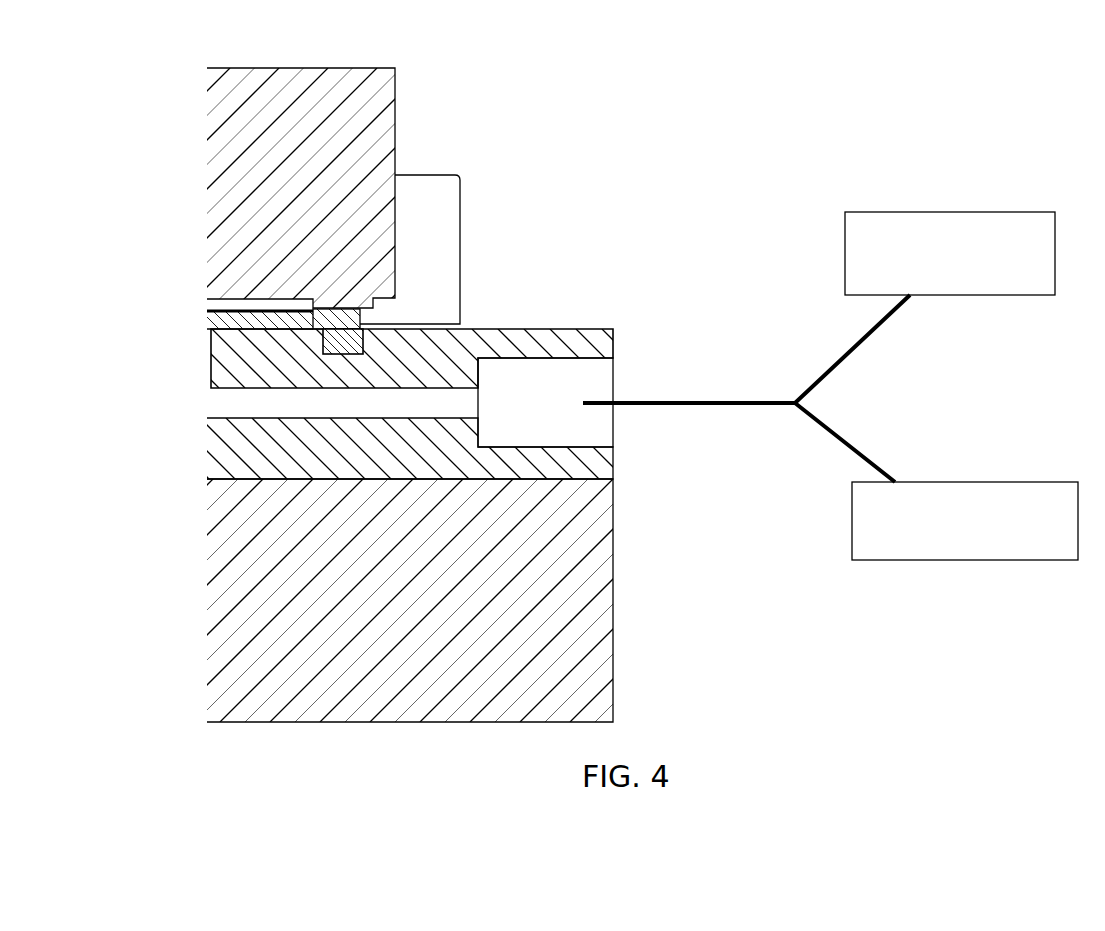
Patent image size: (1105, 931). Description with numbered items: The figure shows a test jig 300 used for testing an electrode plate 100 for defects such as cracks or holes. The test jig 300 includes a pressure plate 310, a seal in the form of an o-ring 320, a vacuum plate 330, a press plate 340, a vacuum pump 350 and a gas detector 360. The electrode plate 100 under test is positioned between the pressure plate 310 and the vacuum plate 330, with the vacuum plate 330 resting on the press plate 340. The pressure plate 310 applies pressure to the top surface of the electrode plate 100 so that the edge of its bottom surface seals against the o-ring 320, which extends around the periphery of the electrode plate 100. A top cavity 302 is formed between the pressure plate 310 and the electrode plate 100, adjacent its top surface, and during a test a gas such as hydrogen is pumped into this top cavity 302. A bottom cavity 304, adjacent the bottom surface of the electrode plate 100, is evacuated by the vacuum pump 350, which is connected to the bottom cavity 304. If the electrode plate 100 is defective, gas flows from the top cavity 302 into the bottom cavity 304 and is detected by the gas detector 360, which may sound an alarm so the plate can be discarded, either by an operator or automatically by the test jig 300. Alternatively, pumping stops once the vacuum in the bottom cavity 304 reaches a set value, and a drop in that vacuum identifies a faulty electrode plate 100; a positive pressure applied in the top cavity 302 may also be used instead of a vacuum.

The test jig 300 is at (813, 112).
The pressure plate 310 is at (355, 143).
The top cavity 302 is at (207, 305).
The electrode plate 100 is at (333, 318).
The o-ring 320 is at (350, 340).
The bottom cavity 304 is at (215, 407).
The vacuum plate 330 is at (585, 462).
The press plate 340 is at (567, 587).
The vacuum pump 350 is at (950, 253).
The gas detector 360 is at (965, 521).